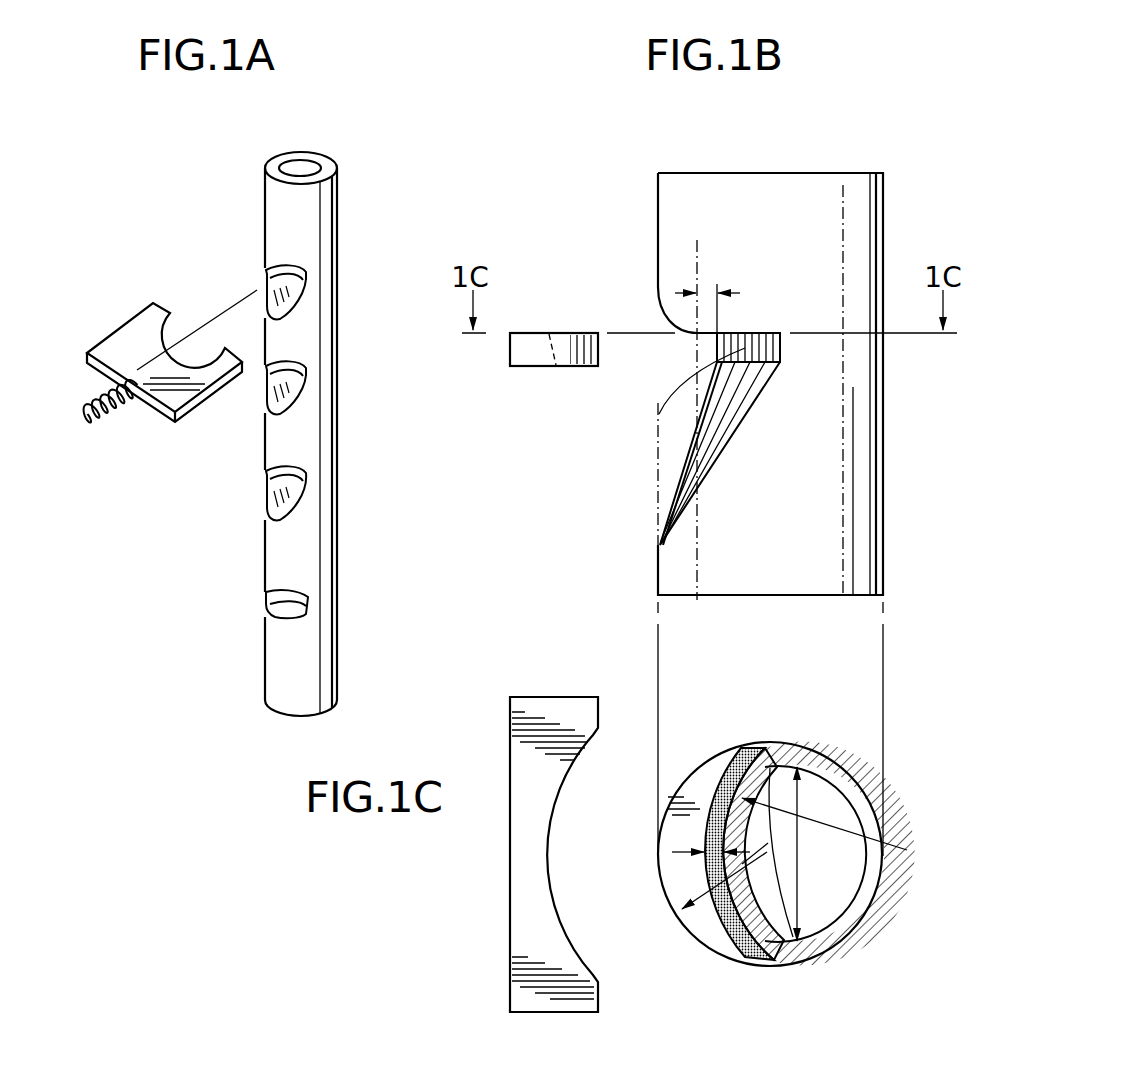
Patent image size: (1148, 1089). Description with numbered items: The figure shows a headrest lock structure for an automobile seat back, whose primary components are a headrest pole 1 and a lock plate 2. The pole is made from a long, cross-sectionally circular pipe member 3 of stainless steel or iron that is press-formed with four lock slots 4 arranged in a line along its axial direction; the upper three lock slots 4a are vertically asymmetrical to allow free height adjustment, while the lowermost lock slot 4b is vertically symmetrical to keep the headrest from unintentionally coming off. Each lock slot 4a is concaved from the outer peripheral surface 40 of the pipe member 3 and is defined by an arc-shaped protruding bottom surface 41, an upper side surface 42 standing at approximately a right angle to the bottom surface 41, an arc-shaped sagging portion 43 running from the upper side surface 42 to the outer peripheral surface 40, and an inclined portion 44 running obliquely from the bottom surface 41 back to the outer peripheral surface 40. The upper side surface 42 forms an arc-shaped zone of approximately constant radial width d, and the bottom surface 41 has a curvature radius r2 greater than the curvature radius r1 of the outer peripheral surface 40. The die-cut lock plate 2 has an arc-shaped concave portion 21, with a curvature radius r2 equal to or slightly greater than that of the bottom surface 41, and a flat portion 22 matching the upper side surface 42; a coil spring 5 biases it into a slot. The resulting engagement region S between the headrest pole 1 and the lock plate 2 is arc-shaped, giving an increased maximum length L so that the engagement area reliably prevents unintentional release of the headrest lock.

In FIG. 1A, the headrest pole 1 is at (332, 434).
In FIG. 1B, the headrest pole 1 is at (629, 388).
In FIG. 1C, the headrest pole 1 is at (804, 873).
In FIG. 1A, the lock plate 2 is at (145, 330).
In FIG. 1B, the lock plate 2 is at (555, 306).
In FIG. 1C, the lock plate 2 is at (544, 854).
In FIG. 1A, the pipe member 3 is at (338, 268).
In FIG. 1B, the pipe member 3 is at (884, 458).
In FIG. 1C, the pipe member 3 is at (853, 933).
In FIG. 1A, the lock slots 4 is at (277, 441).
In FIG. 1A, the upper lock slot 4a is at (296, 298).
In FIG. 1B, the upper lock slot 4a is at (340, 505).
In FIG. 1A, the lowermost lock slot 4b is at (241, 589).
In FIG. 1B, the lowermost lock slot 4b is at (651, 433).
In FIG. 1A, the coil spring 5 is at (122, 416).
In FIG. 1A, the concave portion 21 is at (174, 330).
In FIG. 1B, the concave portion 21 is at (552, 345).
In FIG. 1C, the concave portion 21 is at (568, 930).
In FIG. 1A, the flat portion 22 is at (133, 346).
In FIG. 1B, the flat portion 22 is at (578, 340).
In FIG. 1C, the flat portion 22 is at (565, 968).
In FIG. 1B, the outer peripheral surface 40 is at (657, 222).
In FIG. 1B, the bottom surface 41 is at (720, 352).
In FIG. 1C, the bottom surface 41 is at (742, 957).
In FIG. 1B, the upper side surface 42 is at (718, 334).
In FIG. 1C, the upper side surface 42 is at (713, 800).
In FIG. 1B, the arc-shaped portion 43 is at (668, 326).
In FIG. 1B, the inclined portion 44 is at (661, 485).
In FIG. 1B, the width of upper side surface d is at (707, 298).
In FIG. 1C, the width of upper side surface d is at (720, 839).
In FIG. 1C, the curvature radius of outer peripheral surface r1 is at (712, 880).
In FIG. 1A, the curvature radius of bottom surface r2 is at (158, 340).
In FIG. 1C, the maximum length of engagement region L is at (777, 854).
In FIG. 1C, the engagement region S is at (723, 937).